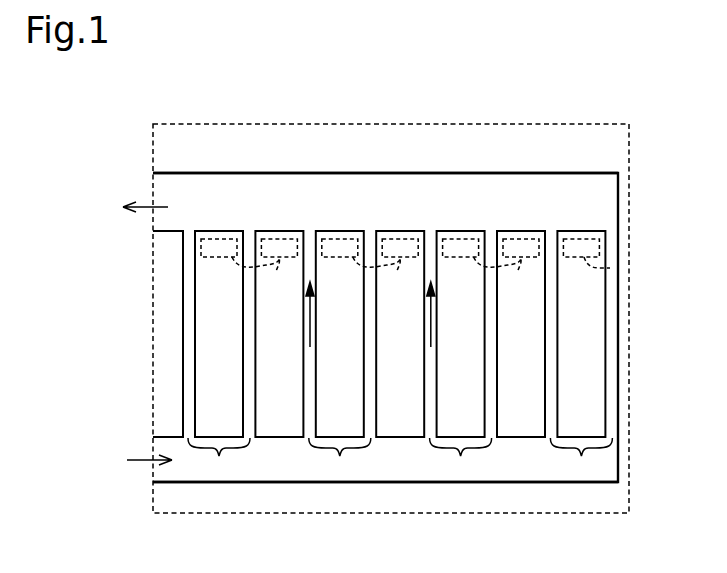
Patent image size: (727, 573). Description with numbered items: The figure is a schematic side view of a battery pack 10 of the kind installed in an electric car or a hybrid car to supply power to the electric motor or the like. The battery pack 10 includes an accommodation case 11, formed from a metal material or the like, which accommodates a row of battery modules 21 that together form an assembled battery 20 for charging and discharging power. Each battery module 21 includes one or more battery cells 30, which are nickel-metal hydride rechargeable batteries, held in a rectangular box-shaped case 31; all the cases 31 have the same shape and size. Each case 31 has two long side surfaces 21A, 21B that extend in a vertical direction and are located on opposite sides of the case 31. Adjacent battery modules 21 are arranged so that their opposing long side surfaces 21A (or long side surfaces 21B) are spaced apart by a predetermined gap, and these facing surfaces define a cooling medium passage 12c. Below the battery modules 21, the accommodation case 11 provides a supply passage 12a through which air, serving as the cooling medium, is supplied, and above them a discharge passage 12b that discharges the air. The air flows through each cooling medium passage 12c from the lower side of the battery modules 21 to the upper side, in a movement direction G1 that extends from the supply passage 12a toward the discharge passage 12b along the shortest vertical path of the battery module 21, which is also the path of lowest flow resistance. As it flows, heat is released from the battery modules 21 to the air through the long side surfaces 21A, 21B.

The battery pack 10 is at (532, 124).
The accommodation case 11 is at (532, 173).
The supply passage 12a is at (520, 482).
The discharge passage 12b is at (446, 172).
The cooling medium passage 12c is at (400, 460).
The assembled battery 20 is at (618, 228).
The battery module 21 is at (268, 230).
The long side surface 21A is at (196, 392).
The long side surface 21B is at (245, 342).
The battery cell 30 is at (610, 268).
The case 31 is at (212, 230).
The movement direction G1 is at (310, 310).